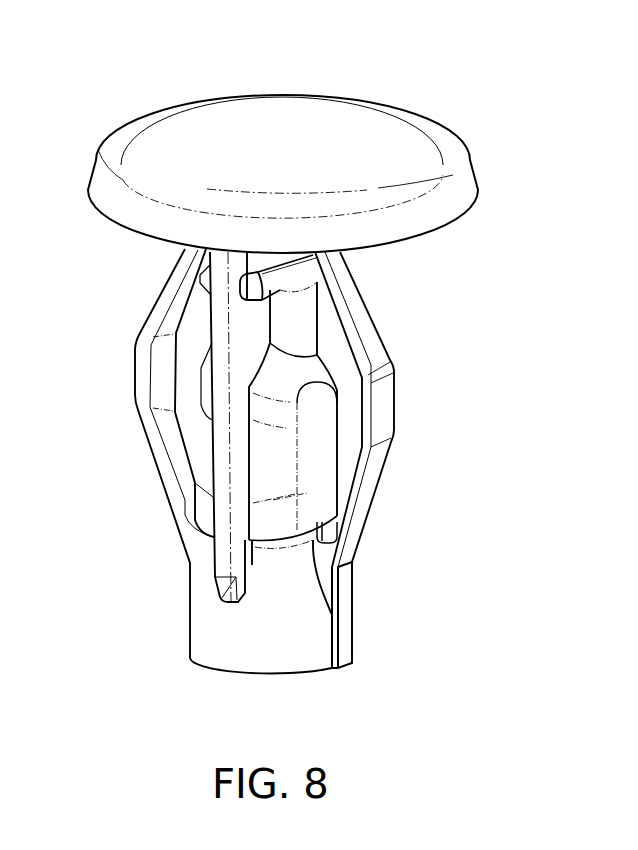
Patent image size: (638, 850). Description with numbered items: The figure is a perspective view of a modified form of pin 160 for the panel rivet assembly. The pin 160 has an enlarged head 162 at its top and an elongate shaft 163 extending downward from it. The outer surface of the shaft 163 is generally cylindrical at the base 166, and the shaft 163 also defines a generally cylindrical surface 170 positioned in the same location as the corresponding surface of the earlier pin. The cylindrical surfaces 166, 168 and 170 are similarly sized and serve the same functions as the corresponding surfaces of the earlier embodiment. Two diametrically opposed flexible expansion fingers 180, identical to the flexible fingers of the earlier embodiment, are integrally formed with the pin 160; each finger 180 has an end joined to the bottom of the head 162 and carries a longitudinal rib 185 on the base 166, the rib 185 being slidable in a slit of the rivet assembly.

The pin 160 is at (255, 449).
The head 162 is at (383, 137).
The shaft 163 is at (340, 444).
The base 166 is at (308, 658).
The cylindrical surface 168 is at (320, 593).
The cylindrical surface 170 is at (283, 515).
The flexible expansion fingers 180 is at (136, 400).
The longitudinal rib 185 is at (343, 585).